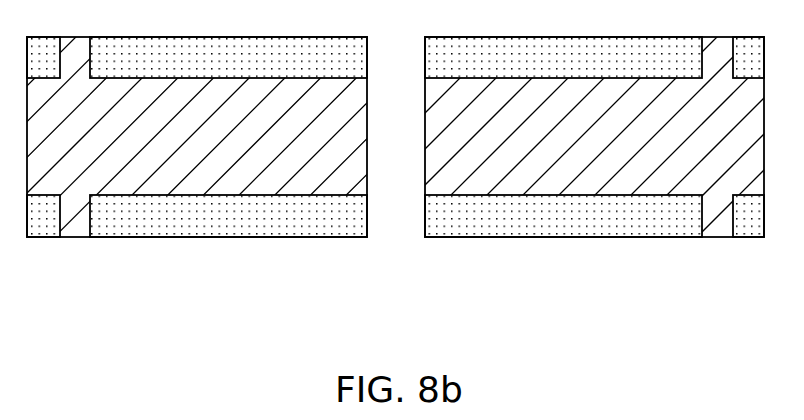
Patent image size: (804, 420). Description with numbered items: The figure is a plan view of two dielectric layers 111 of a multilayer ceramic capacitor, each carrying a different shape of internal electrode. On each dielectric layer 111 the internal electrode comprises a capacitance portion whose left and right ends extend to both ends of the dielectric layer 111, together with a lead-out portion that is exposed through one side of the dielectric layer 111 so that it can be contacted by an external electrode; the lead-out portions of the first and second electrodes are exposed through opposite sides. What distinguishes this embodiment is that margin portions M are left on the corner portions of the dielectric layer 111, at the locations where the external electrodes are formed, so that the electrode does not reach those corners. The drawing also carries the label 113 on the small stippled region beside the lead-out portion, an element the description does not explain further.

The insulating layer 111 is at (288, 220).
The conductive pattern 113 is at (46, 220).
The mask pattern M is at (748, 222).